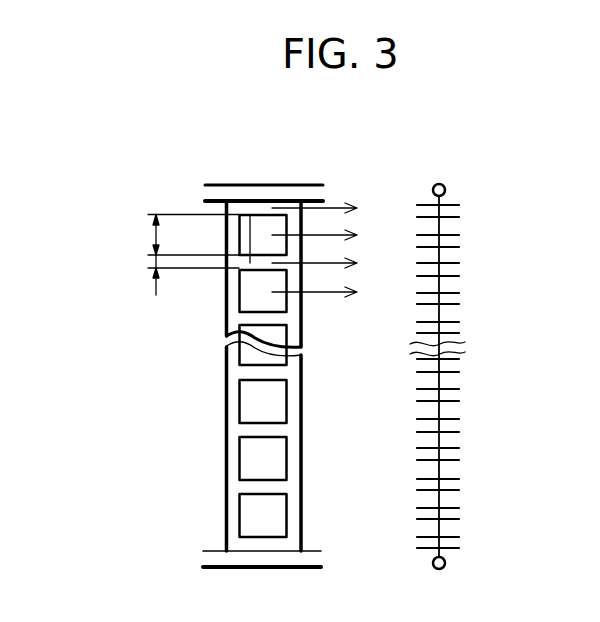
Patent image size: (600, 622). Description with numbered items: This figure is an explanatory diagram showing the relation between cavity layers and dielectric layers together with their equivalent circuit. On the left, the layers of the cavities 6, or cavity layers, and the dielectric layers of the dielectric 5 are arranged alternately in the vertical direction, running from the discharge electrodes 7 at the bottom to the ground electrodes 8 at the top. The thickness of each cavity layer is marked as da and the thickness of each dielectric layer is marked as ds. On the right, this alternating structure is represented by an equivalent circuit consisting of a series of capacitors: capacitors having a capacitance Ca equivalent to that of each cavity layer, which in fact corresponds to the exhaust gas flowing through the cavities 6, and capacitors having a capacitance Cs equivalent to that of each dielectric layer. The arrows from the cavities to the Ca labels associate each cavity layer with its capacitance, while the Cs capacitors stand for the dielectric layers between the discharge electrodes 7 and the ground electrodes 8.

The dielectric 5 is at (249, 218).
The cavities 6 is at (265, 231).
The discharge electrodes 7 is at (219, 556).
The ground electrodes 8 is at (257, 192).
The capacitance of cavity layer Ca is at (336, 363).
The capacitance of dielectric layer Cs is at (455, 376).
The thickness of cavity layer da is at (155, 235).
The thickness of dielectric layer ds is at (155, 264).